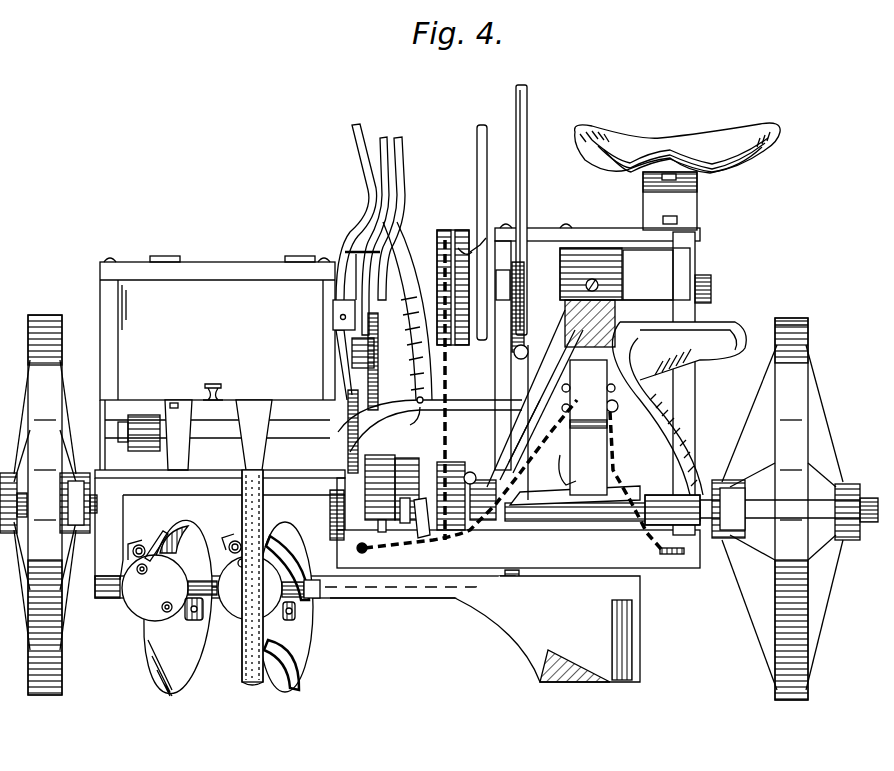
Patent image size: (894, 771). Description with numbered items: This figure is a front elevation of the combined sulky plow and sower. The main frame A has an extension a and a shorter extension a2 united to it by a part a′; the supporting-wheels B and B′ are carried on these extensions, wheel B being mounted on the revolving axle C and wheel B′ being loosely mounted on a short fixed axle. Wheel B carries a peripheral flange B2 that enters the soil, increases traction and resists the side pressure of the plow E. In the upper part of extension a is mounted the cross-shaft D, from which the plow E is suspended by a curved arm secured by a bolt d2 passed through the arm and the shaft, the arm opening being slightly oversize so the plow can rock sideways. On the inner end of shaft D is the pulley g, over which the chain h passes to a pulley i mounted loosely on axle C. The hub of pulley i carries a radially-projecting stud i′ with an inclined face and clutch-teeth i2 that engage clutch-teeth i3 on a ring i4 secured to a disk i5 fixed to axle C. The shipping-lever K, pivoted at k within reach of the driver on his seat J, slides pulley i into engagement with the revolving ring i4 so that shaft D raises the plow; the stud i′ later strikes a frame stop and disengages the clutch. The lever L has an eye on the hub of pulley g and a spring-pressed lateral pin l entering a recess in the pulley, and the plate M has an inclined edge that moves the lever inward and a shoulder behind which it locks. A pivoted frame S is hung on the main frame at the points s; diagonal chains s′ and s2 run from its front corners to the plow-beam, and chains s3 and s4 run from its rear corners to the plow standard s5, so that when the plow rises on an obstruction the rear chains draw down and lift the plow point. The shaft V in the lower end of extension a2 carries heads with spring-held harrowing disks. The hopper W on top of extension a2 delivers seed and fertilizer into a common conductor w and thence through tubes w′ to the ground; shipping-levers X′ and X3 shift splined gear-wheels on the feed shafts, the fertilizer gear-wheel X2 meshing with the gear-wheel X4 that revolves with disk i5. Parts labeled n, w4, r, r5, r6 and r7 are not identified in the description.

The hopper W is at (217, 328).
The common conductor w is at (215, 427).
The tubes w′ is at (190, 435).
The feed shaft pulley w4 is at (481, 496).
The shipping-lever X′ is at (366, 205).
The gear-wheel X2 is at (420, 388).
The shipping-lever X3 is at (392, 172).
The gear-wheel X4 is at (330, 511).
The lever L is at (480, 200).
The plate M is at (530, 227).
The upright rod n is at (529, 222).
The pulley g is at (440, 256).
The chain h is at (455, 390).
The lateral pin l is at (474, 254).
The frame extension a is at (599, 355).
The uniting part a′ is at (311, 587).
The shorter frame extension a2 is at (220, 529).
The main frame A is at (392, 609).
The supporting-wheel B is at (806, 372).
The supporting-wheel B′ is at (48, 505).
The peripheral flange B2 is at (805, 320).
The revolving axle C is at (602, 505).
The cross-shaft D is at (627, 383).
The bolt d2 is at (592, 280).
The plow E is at (547, 629).
The pulley i is at (455, 468).
The radially-projecting stud i′ is at (403, 504).
The clutch-teeth i2 is at (424, 532).
The clutch-teeth i3 is at (392, 528).
The clutch-ring i4 is at (407, 477).
The fixed disk i5 is at (380, 477).
The driver's seat J is at (678, 170).
The shipping-lever K is at (418, 340).
The pivot k is at (408, 423).
The disk hub r is at (152, 590).
The scraper bolt r5 is at (141, 545).
The scraper r6 is at (174, 539).
The scraper arm r7 is at (156, 546).
The suspension points s is at (514, 554).
The diagonal chain s′ is at (603, 427).
The diagonal chain s2 is at (471, 474).
The diagonal chain s3 is at (636, 512).
The diagonal chain s4 is at (575, 490).
The plow standard s5 is at (492, 483).
The pivoted frame S is at (518, 549).
The shaft V is at (221, 607).